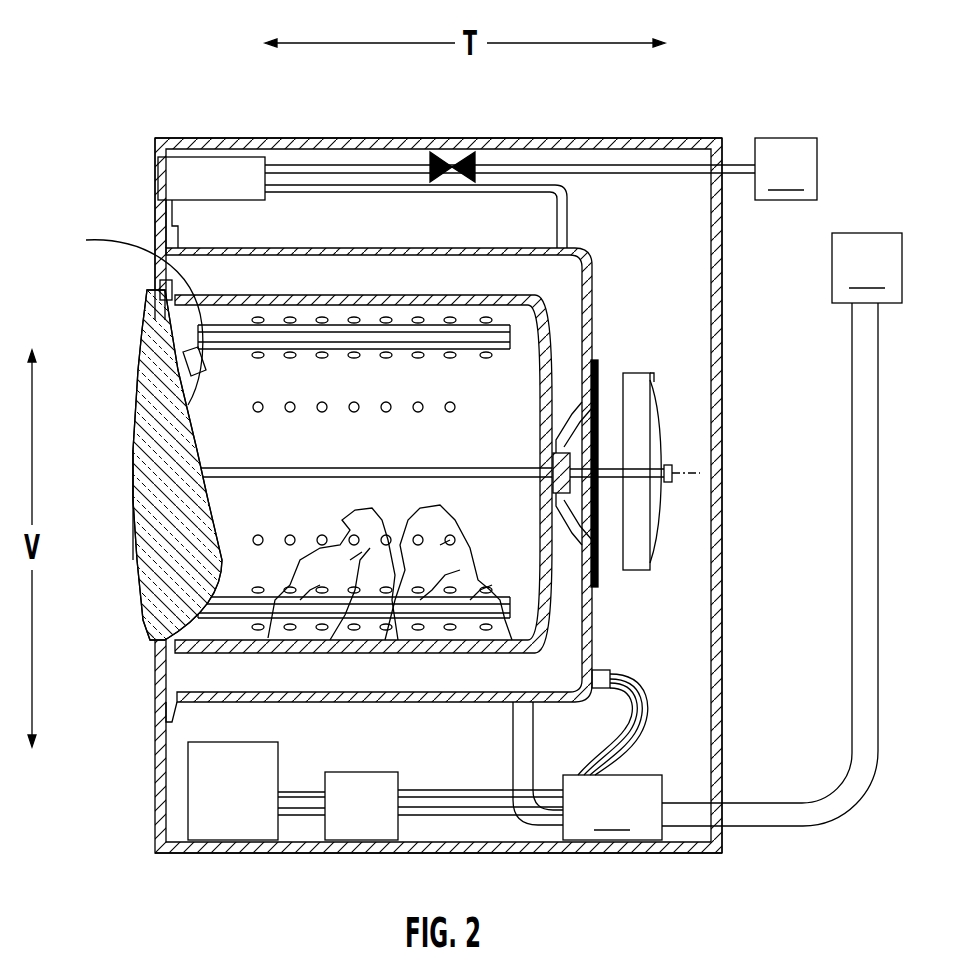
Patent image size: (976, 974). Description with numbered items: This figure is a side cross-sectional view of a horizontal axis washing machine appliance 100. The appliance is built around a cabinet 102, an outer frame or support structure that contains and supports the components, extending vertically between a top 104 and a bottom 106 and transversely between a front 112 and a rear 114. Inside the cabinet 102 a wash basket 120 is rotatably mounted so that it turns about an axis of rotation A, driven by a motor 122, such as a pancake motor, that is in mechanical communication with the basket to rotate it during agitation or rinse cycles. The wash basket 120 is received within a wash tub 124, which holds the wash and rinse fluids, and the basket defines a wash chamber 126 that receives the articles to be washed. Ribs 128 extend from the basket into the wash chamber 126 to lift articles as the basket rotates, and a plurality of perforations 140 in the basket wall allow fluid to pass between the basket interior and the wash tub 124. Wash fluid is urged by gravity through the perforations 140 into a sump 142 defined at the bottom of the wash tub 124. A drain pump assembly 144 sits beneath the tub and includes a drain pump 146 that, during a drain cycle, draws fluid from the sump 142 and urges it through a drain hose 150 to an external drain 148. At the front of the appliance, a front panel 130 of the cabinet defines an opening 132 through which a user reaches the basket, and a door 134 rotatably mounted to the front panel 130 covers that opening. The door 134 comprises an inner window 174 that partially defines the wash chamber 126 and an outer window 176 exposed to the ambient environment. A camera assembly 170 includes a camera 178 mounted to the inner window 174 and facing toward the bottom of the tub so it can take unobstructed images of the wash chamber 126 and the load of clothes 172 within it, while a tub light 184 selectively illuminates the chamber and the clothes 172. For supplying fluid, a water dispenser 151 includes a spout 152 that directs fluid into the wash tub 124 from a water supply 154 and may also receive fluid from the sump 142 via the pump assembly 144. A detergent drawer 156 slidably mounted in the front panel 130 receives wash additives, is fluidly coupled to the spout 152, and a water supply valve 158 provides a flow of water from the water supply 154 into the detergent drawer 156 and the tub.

The washing machine appliance 100 is at (183, 68).
The cabinet 102 is at (724, 478).
The top 104 is at (740, 134).
The bottom 106 is at (760, 848).
The front 112 is at (140, 133).
The rear 114 is at (735, 295).
The wash basket 120 is at (362, 300).
The motor 122 is at (636, 414).
The wash tub 124 is at (588, 320).
The wash chamber 126 is at (211, 423).
The ribs 128 is at (300, 466).
The front panel 130 is at (152, 672).
The opening 132 is at (177, 326).
The door 134 is at (132, 527).
The perforations 140 is at (419, 412).
The sump 142 is at (562, 659).
The drain pump assembly 144 is at (694, 719).
The drain pump 146 is at (425, 755).
The external drain 148 is at (867, 268).
The drain hose 150 is at (850, 615).
The water dispenser 151 is at (864, 168).
The spout 152 is at (570, 228).
The water supply 154 is at (541, 169).
The detergent drawer 156 is at (222, 178).
The water supply valve 158 is at (458, 163).
The camera assembly 170 is at (161, 366).
The load of clothes 172 is at (382, 608).
The inner window 174 is at (215, 528).
The outer window 176 is at (135, 548).
The camera 178 is at (125, 314).
The tub light 184 is at (160, 290).
The axis of rotation A is at (692, 473).